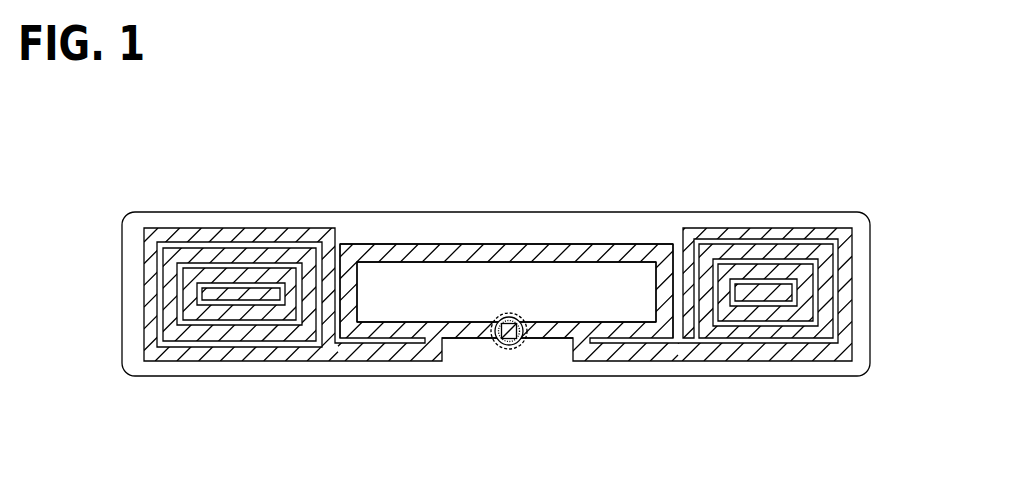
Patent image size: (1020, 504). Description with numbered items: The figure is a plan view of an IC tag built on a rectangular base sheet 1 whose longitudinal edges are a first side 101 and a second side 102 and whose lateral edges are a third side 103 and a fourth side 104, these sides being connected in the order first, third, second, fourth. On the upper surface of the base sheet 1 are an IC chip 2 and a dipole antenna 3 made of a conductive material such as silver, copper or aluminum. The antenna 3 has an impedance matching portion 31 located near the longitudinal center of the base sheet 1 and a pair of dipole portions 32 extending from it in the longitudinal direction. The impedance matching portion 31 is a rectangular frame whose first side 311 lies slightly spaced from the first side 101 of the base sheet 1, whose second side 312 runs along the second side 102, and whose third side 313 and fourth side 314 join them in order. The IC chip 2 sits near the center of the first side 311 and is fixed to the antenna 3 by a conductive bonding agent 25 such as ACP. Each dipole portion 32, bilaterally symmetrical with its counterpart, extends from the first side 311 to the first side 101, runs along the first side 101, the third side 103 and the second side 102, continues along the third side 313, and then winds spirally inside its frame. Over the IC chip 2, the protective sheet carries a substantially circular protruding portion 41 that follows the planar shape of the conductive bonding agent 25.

The base sheet 1 is at (497, 292).
The first side 101 is at (730, 377).
The second side 102 is at (737, 211).
The third side 103 is at (121, 297).
The fourth side 104 is at (870, 288).
The IC chip 2 is at (503, 345).
The conductive bonding agent 25 is at (493, 330).
The antenna 3 is at (504, 296).
The impedance matching portion 31 is at (505, 296).
The first side of impedance matching portion 311 is at (468, 332).
The second side of impedance matching portion 312 is at (530, 247).
The third side of impedance matching portion 313 is at (345, 278).
The fourth side of impedance matching portion 314 is at (674, 277).
The dipole portion 32 is at (224, 214).
The protruding portion 41 is at (513, 343).